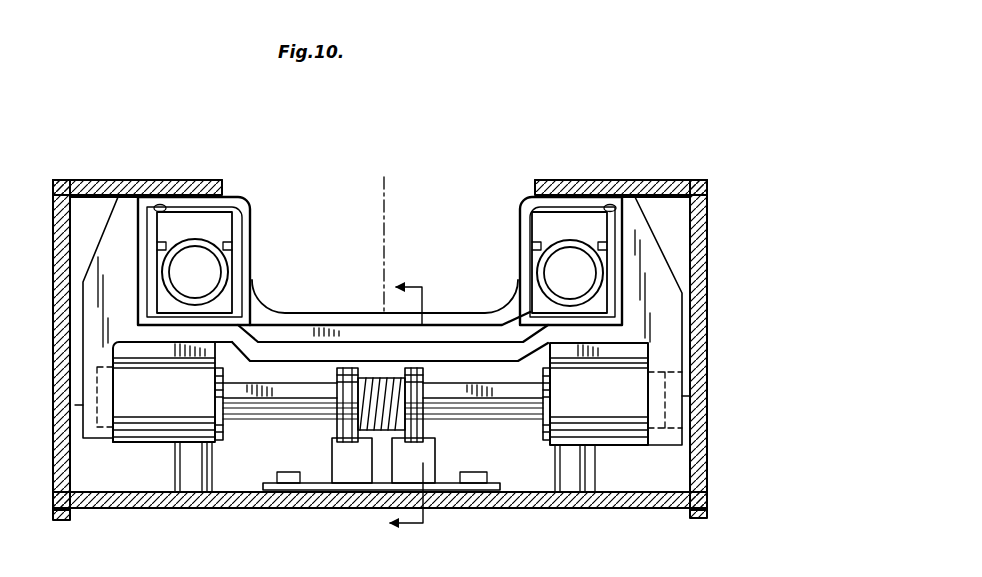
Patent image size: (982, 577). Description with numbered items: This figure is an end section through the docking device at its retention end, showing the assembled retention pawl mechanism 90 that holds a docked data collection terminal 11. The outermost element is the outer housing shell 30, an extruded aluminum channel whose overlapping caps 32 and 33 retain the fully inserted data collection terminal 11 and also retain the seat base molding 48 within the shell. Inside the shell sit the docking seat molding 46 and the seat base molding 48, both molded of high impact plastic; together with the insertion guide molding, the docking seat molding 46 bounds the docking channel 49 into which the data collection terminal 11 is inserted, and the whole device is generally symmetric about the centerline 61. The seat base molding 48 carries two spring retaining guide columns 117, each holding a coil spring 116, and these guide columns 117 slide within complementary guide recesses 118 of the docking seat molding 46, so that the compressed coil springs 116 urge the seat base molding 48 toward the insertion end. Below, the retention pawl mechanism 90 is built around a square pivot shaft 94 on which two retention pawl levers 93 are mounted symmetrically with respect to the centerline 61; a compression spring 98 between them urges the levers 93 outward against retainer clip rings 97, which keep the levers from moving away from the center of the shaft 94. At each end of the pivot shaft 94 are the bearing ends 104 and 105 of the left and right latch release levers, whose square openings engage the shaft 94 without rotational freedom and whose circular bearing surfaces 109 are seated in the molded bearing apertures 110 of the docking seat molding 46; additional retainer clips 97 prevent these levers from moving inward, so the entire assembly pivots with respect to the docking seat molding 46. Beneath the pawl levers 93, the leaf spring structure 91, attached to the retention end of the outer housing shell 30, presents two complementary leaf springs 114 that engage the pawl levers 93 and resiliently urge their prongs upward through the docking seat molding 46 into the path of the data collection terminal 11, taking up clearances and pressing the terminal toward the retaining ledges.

The outer housing shell 30 is at (710, 233).
The cap 32 is at (197, 180).
The cap 33 is at (544, 180).
The docking seat molding 46 is at (653, 211).
The seat base molding 48 is at (243, 196).
The docking channel 49 is at (364, 188).
The centerline 61 is at (386, 246).
The retention pawl mechanism 90 is at (445, 468).
The leaf spring structure 91 is at (322, 472).
The retention pawl lever 93 is at (344, 423).
The square pivot shaft 94 is at (280, 413).
The retainer clip ring 97 is at (222, 440).
The compression spring 98 is at (374, 383).
The bearing end 104 is at (618, 447).
The bearing end 105 is at (153, 440).
The rotational bearing surface 109 is at (103, 440).
The bearing aperture 110 is at (83, 405).
The leaf spring 114 is at (330, 455).
The coil spring 116 is at (228, 265).
The spring retaining guide column 117 is at (240, 275).
The guide recess 118 is at (162, 205).
The data collection terminal 11 is at (409, 414).